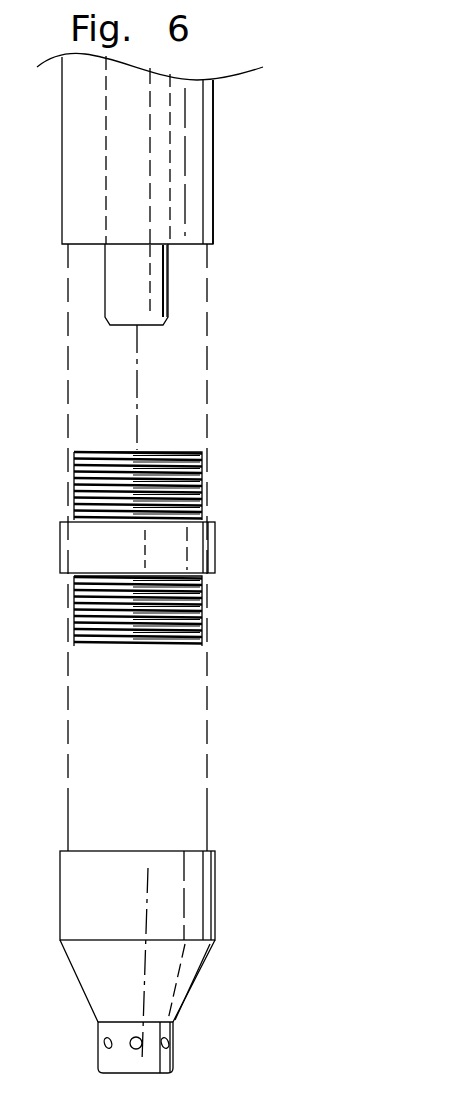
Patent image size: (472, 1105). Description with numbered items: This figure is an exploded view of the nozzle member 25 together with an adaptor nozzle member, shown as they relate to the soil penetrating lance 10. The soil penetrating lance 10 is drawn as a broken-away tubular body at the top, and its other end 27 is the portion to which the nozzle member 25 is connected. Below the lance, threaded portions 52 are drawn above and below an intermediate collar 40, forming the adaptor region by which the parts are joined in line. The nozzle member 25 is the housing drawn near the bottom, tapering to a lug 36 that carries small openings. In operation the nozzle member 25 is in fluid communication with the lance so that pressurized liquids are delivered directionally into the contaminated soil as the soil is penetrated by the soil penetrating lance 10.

The soil penetrating lance 10 is at (232, 188).
The other end 27 is at (215, 138).
The threads 52 is at (202, 473).
The collar 40 is at (232, 553).
The nozzle member 25 is at (232, 910).
The lug with holes 36 is at (170, 1043).